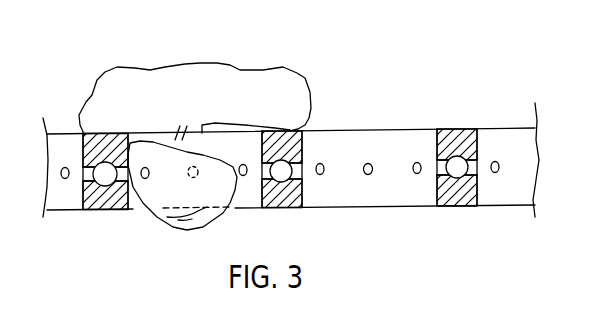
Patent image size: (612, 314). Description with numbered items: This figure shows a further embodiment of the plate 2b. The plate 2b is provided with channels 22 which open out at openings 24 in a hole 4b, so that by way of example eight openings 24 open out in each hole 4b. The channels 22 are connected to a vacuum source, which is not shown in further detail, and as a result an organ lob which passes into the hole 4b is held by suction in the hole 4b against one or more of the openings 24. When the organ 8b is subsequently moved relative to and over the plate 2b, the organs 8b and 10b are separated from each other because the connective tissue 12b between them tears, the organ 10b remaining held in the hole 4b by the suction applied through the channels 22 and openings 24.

The plate 2b is at (458, 168).
The hole 4b is at (363, 142).
The organ 8b is at (294, 91).
The organ 10b is at (187, 225).
The connective tissue 12b is at (181, 130).
The channel 22 is at (445, 207).
The opening 24 is at (368, 176).